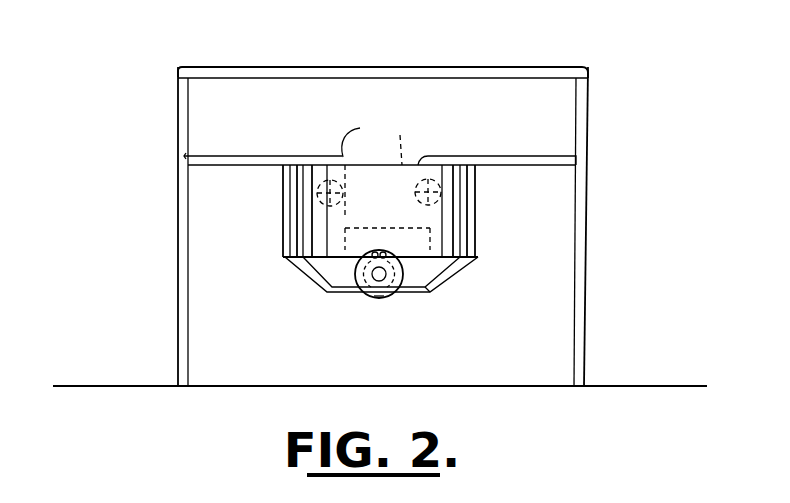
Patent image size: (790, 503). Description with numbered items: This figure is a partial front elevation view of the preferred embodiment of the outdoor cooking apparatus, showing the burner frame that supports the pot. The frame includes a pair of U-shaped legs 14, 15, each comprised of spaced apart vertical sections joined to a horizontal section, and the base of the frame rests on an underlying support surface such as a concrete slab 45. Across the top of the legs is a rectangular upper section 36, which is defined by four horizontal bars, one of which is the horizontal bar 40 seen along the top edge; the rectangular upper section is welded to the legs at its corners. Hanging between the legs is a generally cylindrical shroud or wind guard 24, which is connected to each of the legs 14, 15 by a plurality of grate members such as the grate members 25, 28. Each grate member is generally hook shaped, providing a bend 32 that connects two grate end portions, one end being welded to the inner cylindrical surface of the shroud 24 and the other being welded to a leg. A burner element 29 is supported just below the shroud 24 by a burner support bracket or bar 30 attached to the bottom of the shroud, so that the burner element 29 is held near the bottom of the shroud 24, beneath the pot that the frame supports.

The leg 14 is at (177, 323).
The leg 15 is at (581, 243).
The shroud 24 is at (371, 208).
The grate member 25 is at (263, 156).
The grate member 28 is at (521, 157).
The burner element 29 is at (387, 300).
The burner support bracket 30 is at (430, 294).
The bend 32 is at (379, 160).
The rectangular upper section 36 is at (290, 68).
The horizontal bar 40 is at (452, 68).
The concrete slab 45 is at (127, 374).